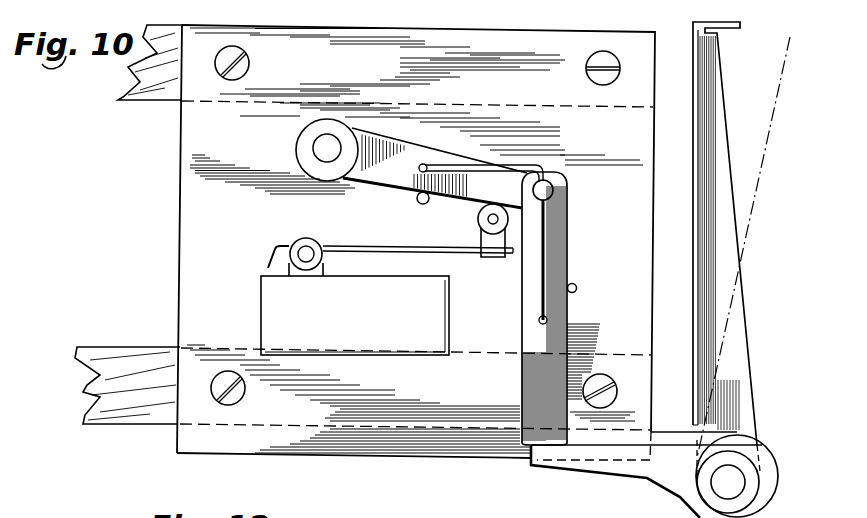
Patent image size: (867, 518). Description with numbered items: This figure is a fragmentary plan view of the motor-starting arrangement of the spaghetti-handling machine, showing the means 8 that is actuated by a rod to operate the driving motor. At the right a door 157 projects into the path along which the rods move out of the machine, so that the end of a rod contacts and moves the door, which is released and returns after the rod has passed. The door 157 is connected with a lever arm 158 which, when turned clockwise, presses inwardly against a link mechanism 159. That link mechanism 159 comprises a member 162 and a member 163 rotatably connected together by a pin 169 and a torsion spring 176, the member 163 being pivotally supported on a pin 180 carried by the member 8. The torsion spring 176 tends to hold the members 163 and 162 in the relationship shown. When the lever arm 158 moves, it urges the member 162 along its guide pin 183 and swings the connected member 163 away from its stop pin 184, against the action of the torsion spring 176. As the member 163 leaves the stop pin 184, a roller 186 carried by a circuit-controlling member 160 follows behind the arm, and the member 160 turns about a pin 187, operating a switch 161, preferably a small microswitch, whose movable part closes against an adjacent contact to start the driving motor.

The means for operating the driving motor 8 is at (175, 188).
The door 157 is at (717, 260).
The lever arm 158 is at (557, 468).
The link mechanism 159 is at (567, 245).
The circuit-controlling member 160 is at (385, 246).
The switch 161 is at (261, 303).
The member of link mechanism 162 is at (528, 307).
The member of link mechanism 163 is at (402, 143).
The pin 169 is at (556, 192).
The torsion spring 176 is at (505, 172).
The pin 180 is at (327, 148).
The guide pin 183 is at (577, 289).
The stop pin 184 is at (427, 203).
The roller 186 is at (482, 228).
The pin 187 is at (300, 254).